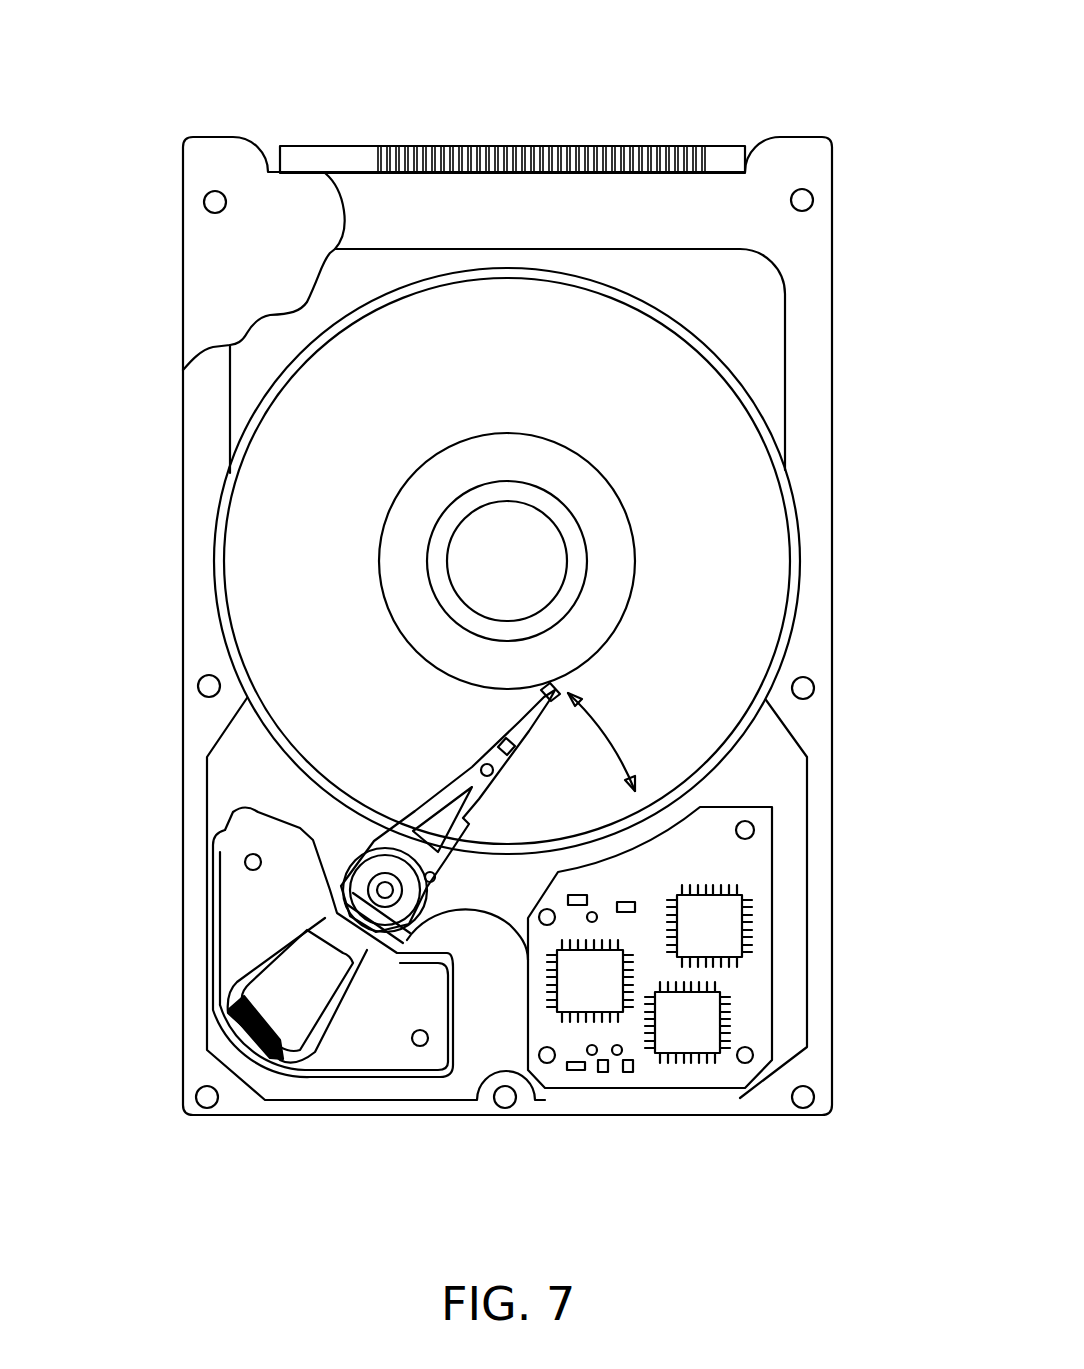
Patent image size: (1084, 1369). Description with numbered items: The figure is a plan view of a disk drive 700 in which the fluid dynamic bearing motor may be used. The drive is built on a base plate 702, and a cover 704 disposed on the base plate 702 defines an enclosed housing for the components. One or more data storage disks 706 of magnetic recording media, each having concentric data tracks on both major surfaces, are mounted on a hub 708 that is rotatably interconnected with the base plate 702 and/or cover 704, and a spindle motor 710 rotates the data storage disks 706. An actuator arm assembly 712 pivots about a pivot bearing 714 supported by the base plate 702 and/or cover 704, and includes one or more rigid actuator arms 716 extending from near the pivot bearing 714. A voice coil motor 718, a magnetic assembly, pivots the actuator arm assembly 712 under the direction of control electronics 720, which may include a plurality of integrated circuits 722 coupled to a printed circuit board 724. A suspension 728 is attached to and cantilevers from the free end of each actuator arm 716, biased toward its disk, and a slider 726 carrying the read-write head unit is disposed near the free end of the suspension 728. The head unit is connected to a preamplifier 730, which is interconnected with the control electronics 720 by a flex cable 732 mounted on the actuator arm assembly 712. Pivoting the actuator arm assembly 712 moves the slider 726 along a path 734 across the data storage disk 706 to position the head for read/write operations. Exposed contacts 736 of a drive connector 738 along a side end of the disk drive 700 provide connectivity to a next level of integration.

The disk drive 700 is at (388, 40).
The base plate 702 is at (207, 640).
The cover 704 is at (257, 261).
The data storage disk 706 is at (348, 442).
The hub 708 is at (390, 512).
The spindle motor 710 is at (477, 580).
The actuator arm assembly 712 is at (478, 869).
The pivot bearing 714 is at (360, 893).
The actuator arm 716 is at (245, 810).
The voice coil motor 718 is at (190, 990).
The control electronics 720 is at (775, 1125).
The integrated circuit 722 is at (713, 923).
The printed circuit board 724 is at (743, 990).
The slider 726 is at (553, 692).
The suspension 728 is at (510, 730).
The preamplifier 730 is at (440, 918).
The flex cable 732 is at (448, 922).
The path 734 is at (610, 740).
The exposed contacts 736 is at (706, 149).
The drive connector 738 is at (288, 154).